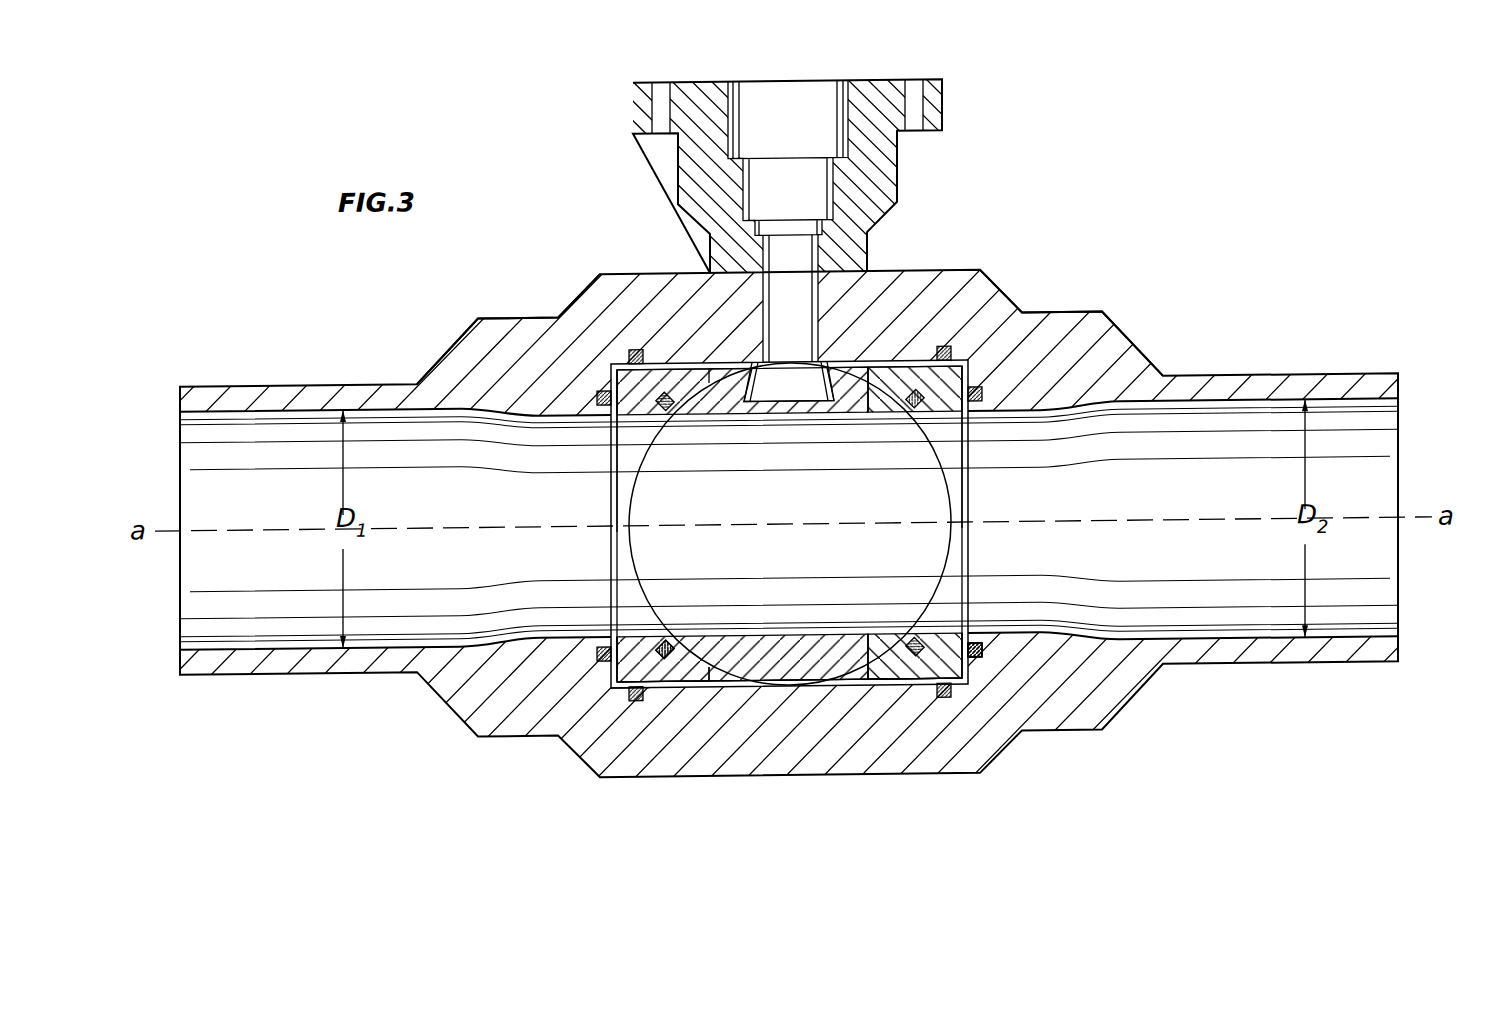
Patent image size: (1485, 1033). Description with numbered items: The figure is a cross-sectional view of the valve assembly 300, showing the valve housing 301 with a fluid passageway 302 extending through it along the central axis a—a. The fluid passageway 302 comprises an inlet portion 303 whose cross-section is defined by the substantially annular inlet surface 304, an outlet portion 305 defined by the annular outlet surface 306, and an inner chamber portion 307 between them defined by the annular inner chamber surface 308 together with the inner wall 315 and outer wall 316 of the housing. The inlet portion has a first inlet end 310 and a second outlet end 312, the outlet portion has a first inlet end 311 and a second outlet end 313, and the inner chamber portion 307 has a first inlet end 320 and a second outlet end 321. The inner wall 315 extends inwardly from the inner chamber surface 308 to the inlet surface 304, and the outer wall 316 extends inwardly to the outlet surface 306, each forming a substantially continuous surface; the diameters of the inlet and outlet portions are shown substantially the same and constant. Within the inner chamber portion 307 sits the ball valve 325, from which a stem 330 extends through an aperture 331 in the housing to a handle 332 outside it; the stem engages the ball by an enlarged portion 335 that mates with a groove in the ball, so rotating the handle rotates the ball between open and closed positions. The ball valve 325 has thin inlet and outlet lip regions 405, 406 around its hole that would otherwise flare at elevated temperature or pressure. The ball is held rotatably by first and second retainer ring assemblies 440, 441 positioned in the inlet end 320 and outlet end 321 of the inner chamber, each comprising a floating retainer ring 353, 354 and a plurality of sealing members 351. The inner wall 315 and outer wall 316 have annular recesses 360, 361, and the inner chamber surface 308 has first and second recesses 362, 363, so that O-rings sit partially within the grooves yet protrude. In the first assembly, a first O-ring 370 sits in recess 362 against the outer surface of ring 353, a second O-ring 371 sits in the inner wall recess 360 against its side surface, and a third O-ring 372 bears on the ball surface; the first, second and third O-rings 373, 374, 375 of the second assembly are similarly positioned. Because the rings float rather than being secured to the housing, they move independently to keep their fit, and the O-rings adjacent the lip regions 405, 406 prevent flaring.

The valve assembly 300 is at (1084, 284).
The valve housing 301 is at (1138, 354).
The fluid passageway 302 is at (178, 511).
The inlet portion 303 is at (395, 589).
The inlet surface 304 is at (240, 406).
The outlet portion 305 is at (1183, 584).
The outlet surface 306 is at (1362, 408).
The inner chamber portion 307 is at (860, 684).
The inner chamber surface 308 is at (803, 305).
The first inlet end of inlet portion 310 is at (182, 603).
The first inlet end of outlet portion 311 is at (965, 607).
The second outlet end of inlet portion 312 is at (627, 591).
The second outlet end of outlet portion 313 is at (1398, 584).
The inner wall 315 is at (598, 383).
The outer wall 316 is at (980, 374).
The first inlet end of inner chamber portion 320 is at (640, 438).
The second outlet end of inner chamber portion 321 is at (967, 470).
The ball valve 325 is at (740, 688).
The stem 330 is at (818, 296).
The aperture 331 is at (757, 298).
The handle 332 is at (943, 102).
The enlarged portion 335 is at (745, 362).
The sealing members 351 is at (670, 639).
The first floating retainer ring 353 is at (610, 690).
The second floating retainer ring 354 is at (910, 674).
The inner wall recess 360 is at (596, 403).
The outer wall recess 361 is at (982, 399).
The first inner chamber surface recess 362 is at (628, 350).
The second inner chamber surface recess 363 is at (992, 357).
The first O-ring 370 is at (640, 700).
The second O-ring 371 is at (600, 646).
The third O-ring 372 is at (657, 639).
The first O-ring of second retainer ring assembly 373 is at (946, 702).
The second O-ring of second retainer ring assembly 374 is at (983, 657).
The third O-ring of second retainer ring assembly 375 is at (980, 654).
The inlet lip region 405 is at (658, 411).
The outlet lip region 406 is at (912, 413).
The first retainer ring assembly 440 is at (623, 671).
The second retainer ring assembly 441 is at (938, 657).